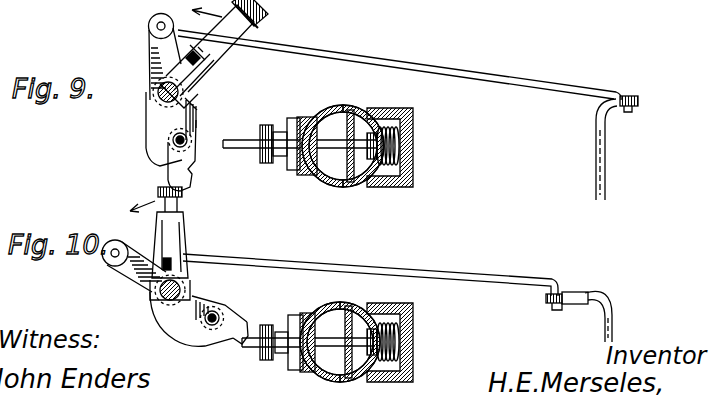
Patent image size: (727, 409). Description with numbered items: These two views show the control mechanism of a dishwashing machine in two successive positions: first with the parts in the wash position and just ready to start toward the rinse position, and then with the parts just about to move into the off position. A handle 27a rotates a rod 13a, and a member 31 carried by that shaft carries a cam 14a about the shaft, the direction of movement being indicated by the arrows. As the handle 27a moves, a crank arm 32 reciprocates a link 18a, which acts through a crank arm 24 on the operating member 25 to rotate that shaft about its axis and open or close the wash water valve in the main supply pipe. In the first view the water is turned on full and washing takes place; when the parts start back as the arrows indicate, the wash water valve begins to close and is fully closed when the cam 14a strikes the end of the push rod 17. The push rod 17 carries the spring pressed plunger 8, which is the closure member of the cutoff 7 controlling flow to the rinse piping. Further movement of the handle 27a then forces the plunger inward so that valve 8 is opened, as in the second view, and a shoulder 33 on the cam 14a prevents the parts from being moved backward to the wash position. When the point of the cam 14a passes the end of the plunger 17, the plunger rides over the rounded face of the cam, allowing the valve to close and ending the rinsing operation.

In FIG. 9, the cutoff 7 is at (331, 114).
In FIG. 10, the cutoff 7 is at (332, 310).
In FIG. 9, the spring pressed plunger 8 is at (372, 110).
In FIG. 10, the spring pressed plunger 8 is at (374, 306).
In FIG. 9, the rod 13a is at (160, 101).
In FIG. 10, the rod 13a is at (155, 297).
In FIG. 9, the cam 14a is at (190, 157).
In FIG. 10, the cam 14a is at (216, 346).
In FIG. 9, the push rod 17 is at (247, 139).
In FIG. 10, the push rod 17 is at (254, 350).
In FIG. 9, the link 18a is at (503, 80).
In FIG. 10, the link 18a is at (463, 272).
In FIG. 9, the crank arm 24 is at (638, 103).
In FIG. 10, the crank arm 24 is at (578, 292).
In FIG. 9, the operating member 25 is at (610, 166).
In FIG. 10, the operating member 25 is at (614, 323).
In FIG. 9, the handle 27a is at (266, 18).
In FIG. 10, the handle 27a is at (158, 191).
In FIG. 9, the member 31 is at (153, 125).
In FIG. 10, the member 31 is at (178, 320).
In FIG. 9, the crank arm 32 is at (157, 38).
In FIG. 10, the crank arm 32 is at (112, 271).
In FIG. 9, the shoulder 33 is at (194, 173).
In FIG. 10, the shoulder 33 is at (242, 326).